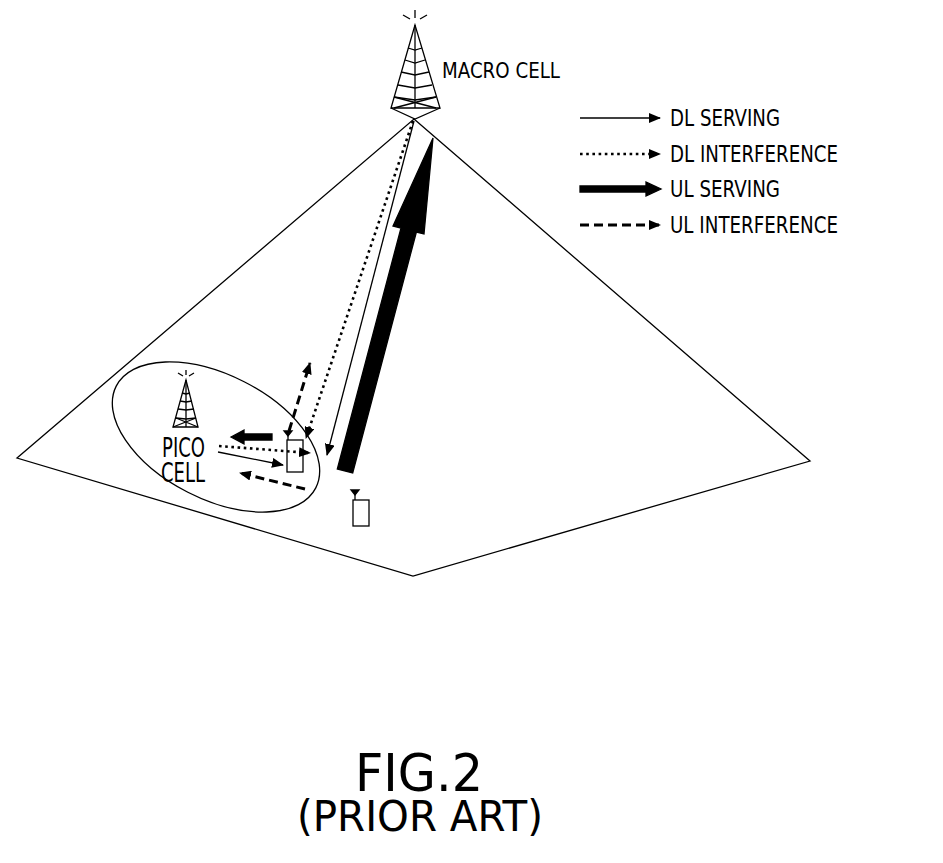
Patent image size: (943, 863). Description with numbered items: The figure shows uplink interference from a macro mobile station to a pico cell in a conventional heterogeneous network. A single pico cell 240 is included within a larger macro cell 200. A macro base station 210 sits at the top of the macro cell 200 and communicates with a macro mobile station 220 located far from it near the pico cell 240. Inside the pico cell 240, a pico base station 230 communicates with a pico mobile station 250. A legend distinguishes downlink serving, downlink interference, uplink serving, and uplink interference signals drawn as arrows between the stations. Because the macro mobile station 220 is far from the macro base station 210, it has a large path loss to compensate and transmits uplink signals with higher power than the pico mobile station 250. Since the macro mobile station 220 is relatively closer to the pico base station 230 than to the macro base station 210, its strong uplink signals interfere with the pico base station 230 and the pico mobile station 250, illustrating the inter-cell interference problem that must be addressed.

The macro cell 200 is at (283, 229).
The macro base station 210 is at (403, 72).
The macro mobile station 220 is at (370, 510).
The pico base station 230 is at (175, 405).
The pico cell 240 is at (211, 363).
The pico mobile station 250 is at (286, 434).